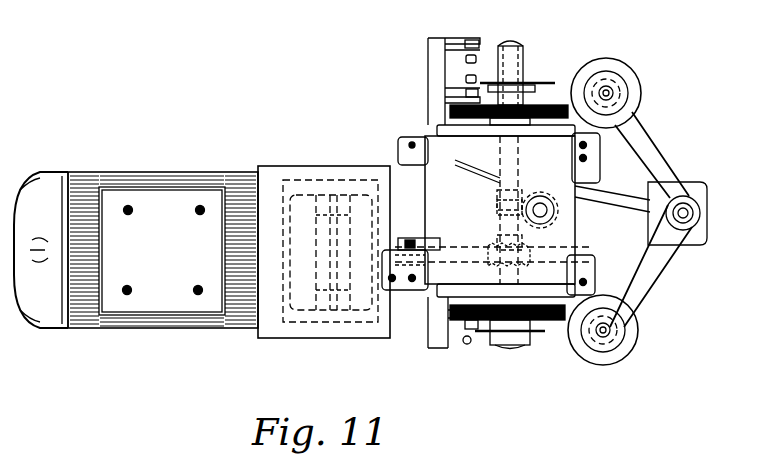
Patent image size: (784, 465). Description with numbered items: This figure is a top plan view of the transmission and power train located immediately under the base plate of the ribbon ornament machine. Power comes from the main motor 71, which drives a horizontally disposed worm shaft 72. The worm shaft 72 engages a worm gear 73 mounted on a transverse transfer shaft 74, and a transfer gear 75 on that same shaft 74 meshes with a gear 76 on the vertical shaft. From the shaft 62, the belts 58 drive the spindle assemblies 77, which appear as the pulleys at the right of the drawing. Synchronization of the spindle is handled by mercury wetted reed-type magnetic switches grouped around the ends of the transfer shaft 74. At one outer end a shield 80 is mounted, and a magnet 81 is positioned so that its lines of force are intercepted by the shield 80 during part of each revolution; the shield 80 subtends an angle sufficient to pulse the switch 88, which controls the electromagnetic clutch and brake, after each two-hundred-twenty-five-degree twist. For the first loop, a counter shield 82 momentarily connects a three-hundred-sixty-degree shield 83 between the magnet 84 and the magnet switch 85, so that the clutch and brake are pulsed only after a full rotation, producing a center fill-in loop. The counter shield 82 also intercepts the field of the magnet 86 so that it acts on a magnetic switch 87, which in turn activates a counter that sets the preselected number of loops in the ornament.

The belts 58 is at (655, 143).
The shaft 62 is at (690, 217).
The main motor 71 is at (150, 330).
The worm shaft 72 is at (482, 250).
The worm gear 73 is at (500, 268).
The transfer shaft 74 is at (502, 167).
The transfer gear 75 is at (499, 205).
The gear 76 is at (545, 197).
The spindle assemblies 77 is at (628, 73).
The shield 80 is at (538, 340).
The magnet 81 is at (464, 326).
The counter shield 82 is at (487, 48).
The 360° shield 83 is at (530, 83).
The magnet 84 is at (466, 94).
The magnet switch 85 is at (466, 79).
The magnet 86 is at (465, 44).
The magnetic switch 87 is at (466, 60).
The switch 88 is at (469, 345).